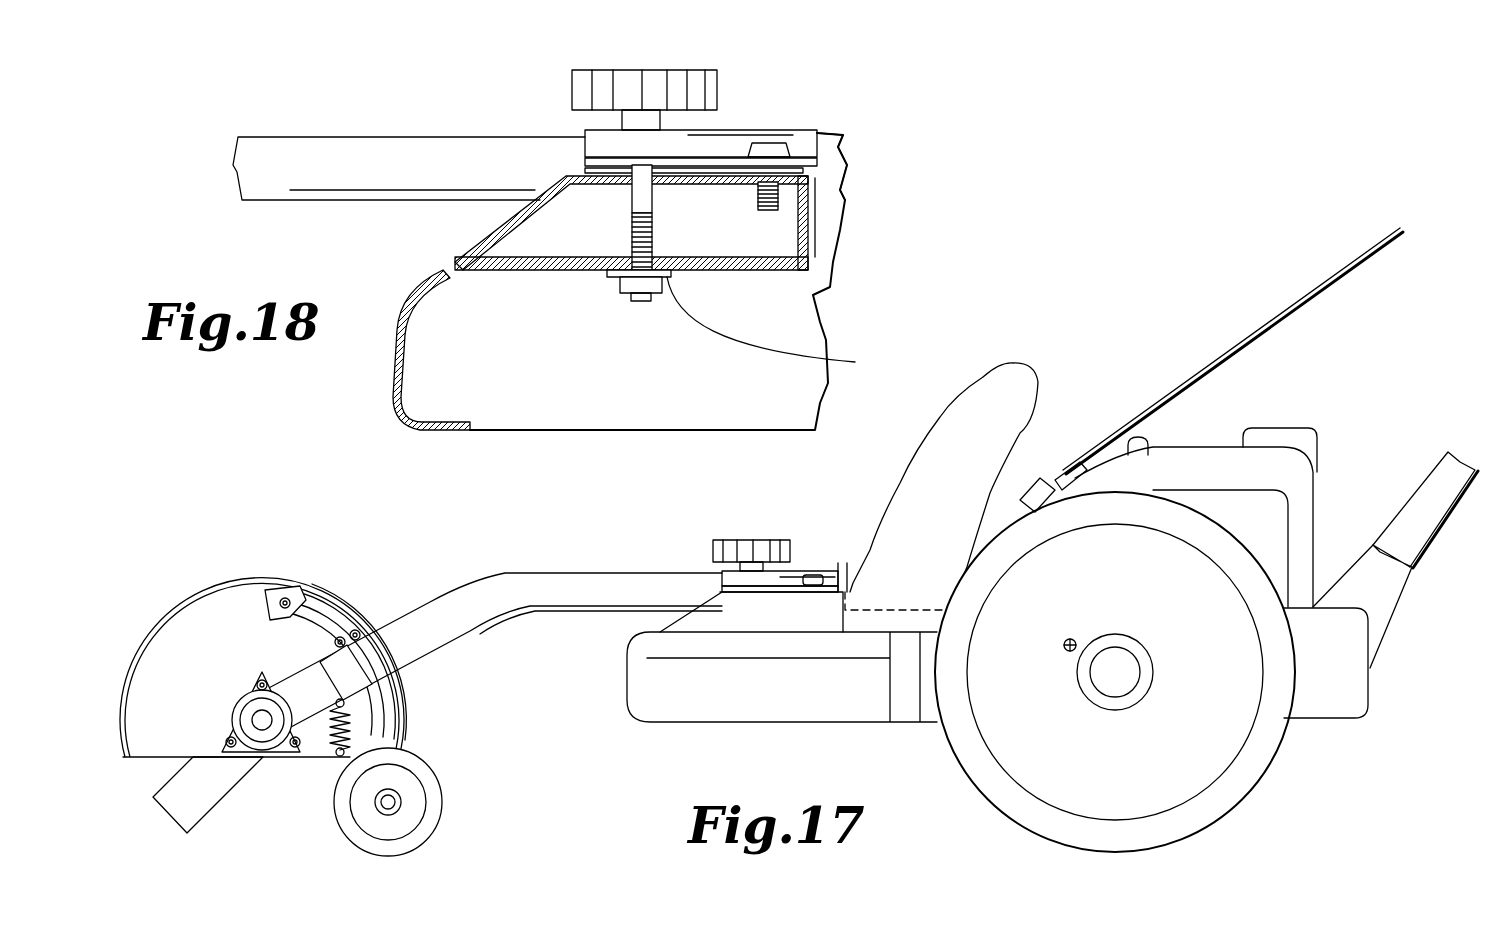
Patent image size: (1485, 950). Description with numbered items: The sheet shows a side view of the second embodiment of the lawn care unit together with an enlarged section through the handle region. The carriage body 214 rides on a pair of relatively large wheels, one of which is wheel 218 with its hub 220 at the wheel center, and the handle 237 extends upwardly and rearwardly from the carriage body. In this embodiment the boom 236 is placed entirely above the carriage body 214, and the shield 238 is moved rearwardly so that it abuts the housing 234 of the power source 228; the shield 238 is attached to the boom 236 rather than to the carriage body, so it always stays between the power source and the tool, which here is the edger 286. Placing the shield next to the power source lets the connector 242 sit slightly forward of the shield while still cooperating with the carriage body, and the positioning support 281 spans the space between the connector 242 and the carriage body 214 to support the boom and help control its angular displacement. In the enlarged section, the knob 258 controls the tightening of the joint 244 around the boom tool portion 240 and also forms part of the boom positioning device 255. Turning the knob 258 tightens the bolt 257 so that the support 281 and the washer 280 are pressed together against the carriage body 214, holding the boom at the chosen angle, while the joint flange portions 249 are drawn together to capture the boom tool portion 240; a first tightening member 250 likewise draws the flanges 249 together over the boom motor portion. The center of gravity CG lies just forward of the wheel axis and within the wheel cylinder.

In FIG. 18, the carriage body 214 is at (390, 378).
In FIG. 17, the carriage body 214 is at (673, 713).
In FIG. 17, the wheel 218 is at (1268, 725).
In FIG. 17, the wheel hub 220 is at (1125, 676).
In FIG. 17, the power source 228 is at (1212, 468).
In FIG. 17, the housing 234 is at (1285, 470).
In FIG. 17, the boom 236 is at (486, 621).
In FIG. 17, the handle 237 is at (1420, 520).
In FIG. 18, the shield 238 is at (835, 150).
In FIG. 17, the shield 238 is at (1005, 406).
In FIG. 18, the boom tool portion 240 is at (418, 147).
In FIG. 17, the boom tool portion 240 is at (420, 633).
In FIG. 18, the connector 242 is at (728, 122).
In FIG. 17, the connector 242 is at (811, 560).
In FIG. 18, the joint 244 is at (772, 128).
In FIG. 18, the joint flange portions 249 is at (846, 170).
In FIG. 18, the first tightening member 250 is at (787, 145).
In FIG. 18, the boom positioning device 255 is at (688, 110).
In FIG. 18, the bolt 257 is at (785, 325).
In FIG. 18, the knob 258 is at (652, 80).
In FIG. 17, the knob 258 is at (742, 545).
In FIG. 18, the washer 280 is at (670, 275).
In FIG. 18, the positioning support 281 is at (492, 238).
In FIG. 17, the positioning support 281 is at (695, 623).
In FIG. 17, the edger 286 is at (195, 632).
In FIG. 17, the center of gravity CG is at (1063, 651).